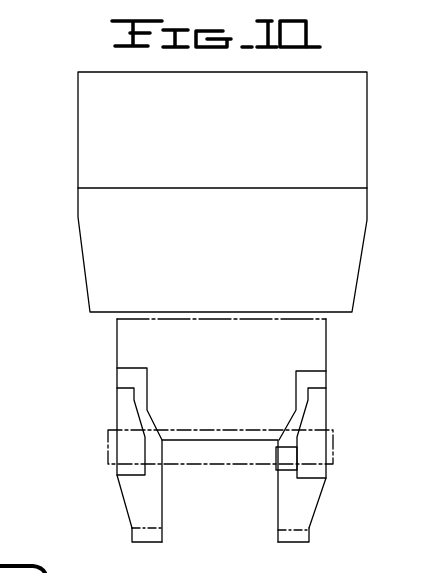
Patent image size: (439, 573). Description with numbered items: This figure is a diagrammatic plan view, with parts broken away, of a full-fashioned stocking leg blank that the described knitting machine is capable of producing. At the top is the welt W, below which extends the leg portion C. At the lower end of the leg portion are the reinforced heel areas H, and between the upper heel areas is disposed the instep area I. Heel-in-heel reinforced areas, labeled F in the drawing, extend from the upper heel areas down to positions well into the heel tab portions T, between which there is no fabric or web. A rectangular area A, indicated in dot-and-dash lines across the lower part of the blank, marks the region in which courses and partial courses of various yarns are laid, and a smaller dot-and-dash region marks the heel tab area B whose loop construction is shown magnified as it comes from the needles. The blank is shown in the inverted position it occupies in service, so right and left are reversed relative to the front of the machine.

The welt W is at (93, 113).
The leg portion C is at (352, 277).
The reinforced heel areas H is at (128, 371).
The flange F is at (122, 402).
The instep area I is at (237, 433).
The heel tab area B is at (288, 447).
The area A is at (333, 445).
The heel tab portions T is at (155, 523).